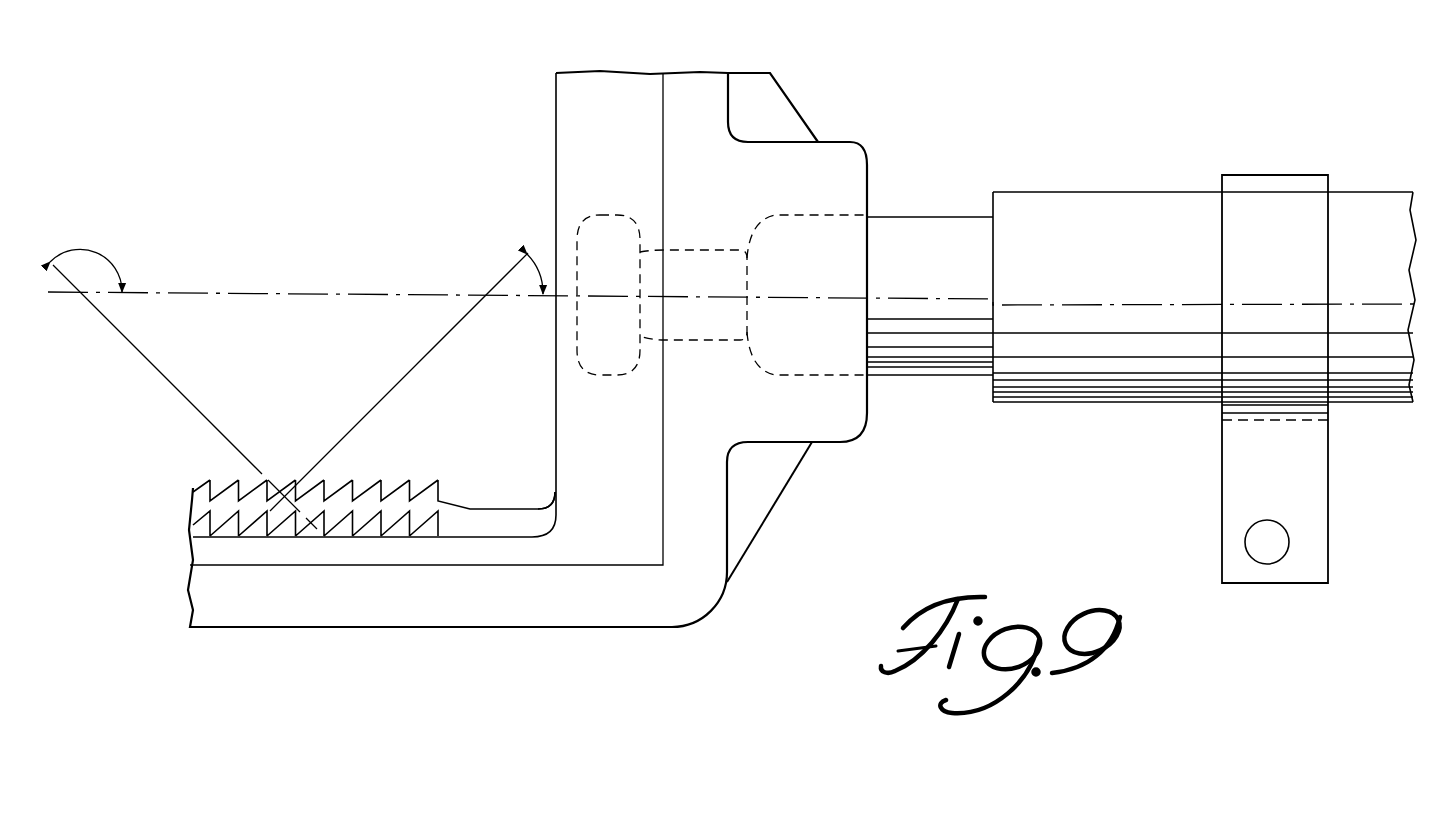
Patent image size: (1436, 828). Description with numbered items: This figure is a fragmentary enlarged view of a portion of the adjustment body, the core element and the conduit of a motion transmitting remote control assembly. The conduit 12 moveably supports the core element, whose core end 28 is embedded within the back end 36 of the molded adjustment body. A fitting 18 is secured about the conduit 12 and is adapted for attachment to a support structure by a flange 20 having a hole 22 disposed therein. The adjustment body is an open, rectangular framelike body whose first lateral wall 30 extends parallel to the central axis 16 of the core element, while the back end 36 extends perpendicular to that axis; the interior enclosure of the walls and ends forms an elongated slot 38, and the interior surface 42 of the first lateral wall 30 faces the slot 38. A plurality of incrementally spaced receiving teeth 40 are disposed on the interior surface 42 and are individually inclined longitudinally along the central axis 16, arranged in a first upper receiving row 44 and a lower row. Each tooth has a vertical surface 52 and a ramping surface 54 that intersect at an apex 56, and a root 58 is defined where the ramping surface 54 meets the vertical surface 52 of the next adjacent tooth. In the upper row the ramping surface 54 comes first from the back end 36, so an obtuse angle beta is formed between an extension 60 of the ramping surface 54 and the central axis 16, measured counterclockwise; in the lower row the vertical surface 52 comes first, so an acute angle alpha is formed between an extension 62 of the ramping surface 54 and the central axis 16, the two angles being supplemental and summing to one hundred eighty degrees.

The conduit 12 is at (1048, 204).
The central axis 16 is at (318, 294).
The fitting 18 is at (1310, 283).
The flange 20 is at (1302, 476).
The hole 22 is at (1272, 560).
The core end 28 is at (604, 228).
The first lateral wall 30 is at (628, 628).
The back end 36 is at (727, 522).
The elongated slot 38 is at (548, 410).
The receiving teeth 40 is at (467, 486).
The interior surface 42 is at (552, 508).
The first upper receiving row 44 is at (438, 478).
The vertical surface 52 is at (440, 524).
The ramping surface 54 is at (190, 518).
The apex 56 is at (224, 492).
The root 58 is at (409, 538).
The extension of the ramping surface 60 is at (192, 402).
The extension of the ramping surface 62 is at (430, 353).